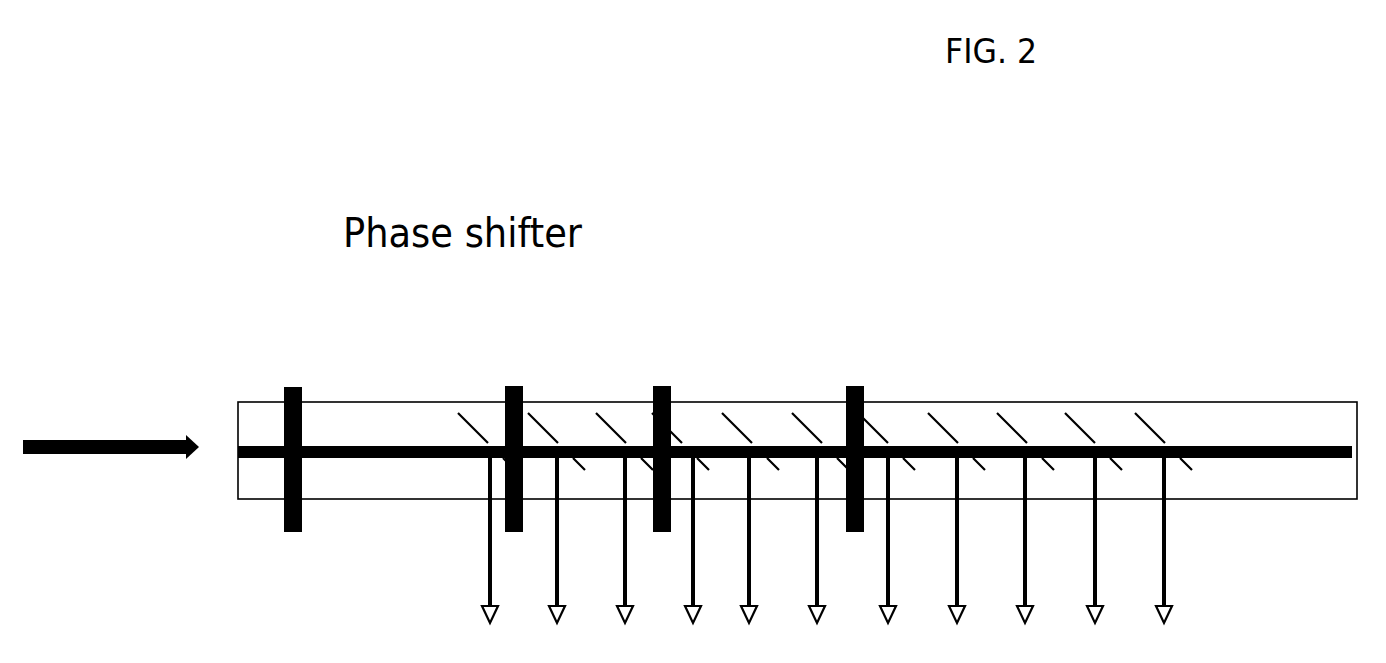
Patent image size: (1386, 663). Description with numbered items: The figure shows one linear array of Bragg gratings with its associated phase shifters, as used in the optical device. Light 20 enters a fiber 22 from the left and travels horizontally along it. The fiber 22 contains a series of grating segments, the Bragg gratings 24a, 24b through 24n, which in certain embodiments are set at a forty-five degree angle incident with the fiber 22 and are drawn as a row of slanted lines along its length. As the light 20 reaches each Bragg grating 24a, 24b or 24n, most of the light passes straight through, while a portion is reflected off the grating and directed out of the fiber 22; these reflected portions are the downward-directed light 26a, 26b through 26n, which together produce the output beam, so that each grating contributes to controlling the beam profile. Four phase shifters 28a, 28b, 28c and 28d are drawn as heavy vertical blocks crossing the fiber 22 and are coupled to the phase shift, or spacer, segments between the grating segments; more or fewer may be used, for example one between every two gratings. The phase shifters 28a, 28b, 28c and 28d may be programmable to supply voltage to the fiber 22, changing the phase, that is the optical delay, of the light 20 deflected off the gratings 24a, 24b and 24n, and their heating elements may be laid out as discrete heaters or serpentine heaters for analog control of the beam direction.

The light 20 is at (114, 440).
The fiber 22 is at (267, 446).
The Bragg grating 24a is at (459, 413).
The Bragg grating 24b is at (529, 412).
The Bragg grating 24n is at (1137, 414).
The reflected light 26a is at (488, 590).
The reflected light 26b is at (561, 621).
The reflected light 26n is at (1167, 593).
The phase shifter 28a is at (296, 387).
The phase shifter 28b is at (513, 386).
The phase shifter 28c is at (662, 386).
The phase shifter 28d is at (854, 386).